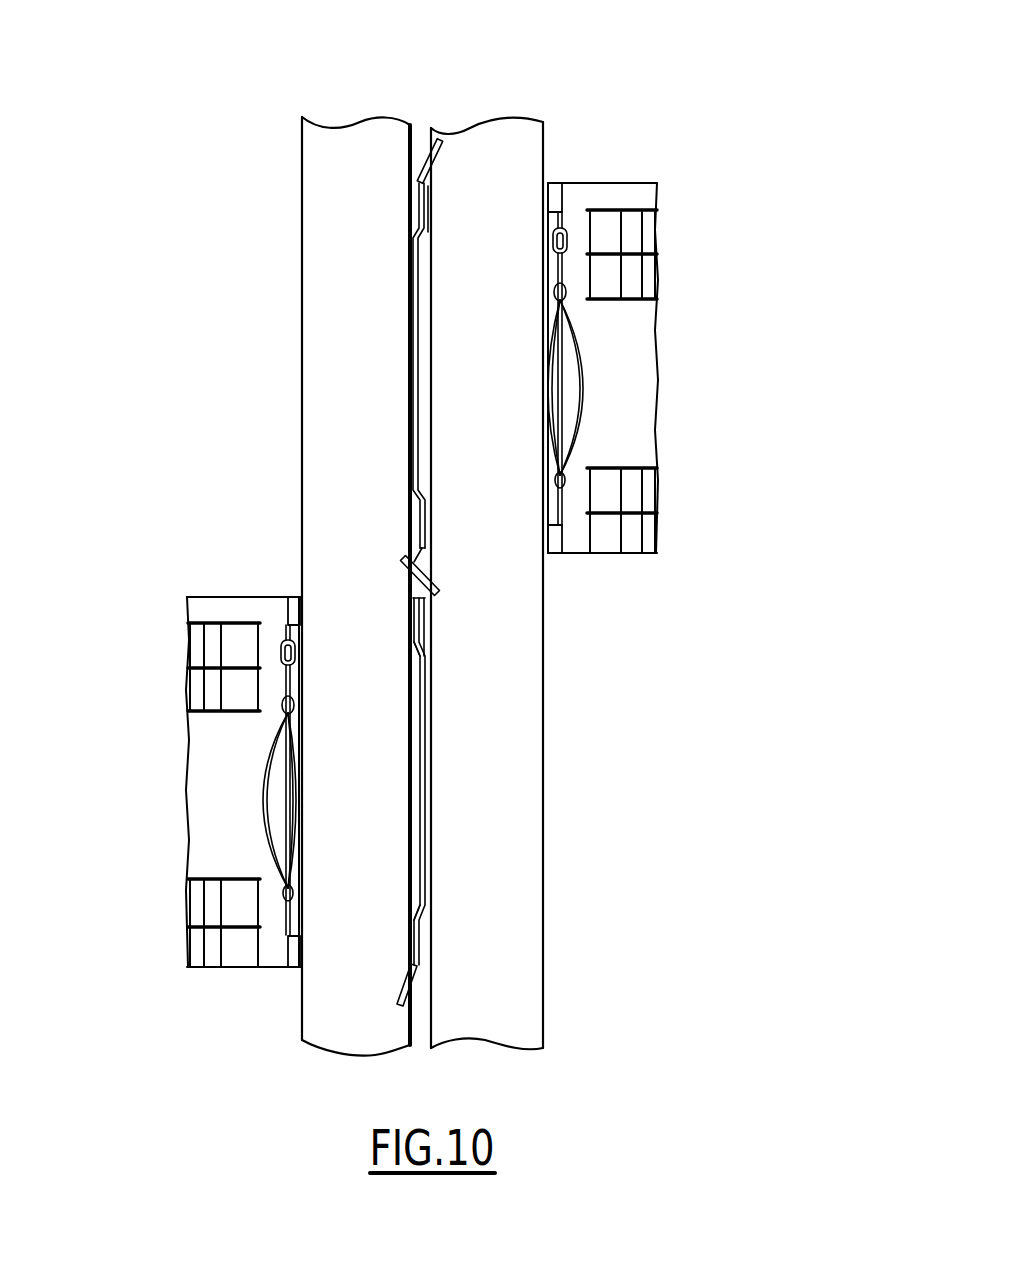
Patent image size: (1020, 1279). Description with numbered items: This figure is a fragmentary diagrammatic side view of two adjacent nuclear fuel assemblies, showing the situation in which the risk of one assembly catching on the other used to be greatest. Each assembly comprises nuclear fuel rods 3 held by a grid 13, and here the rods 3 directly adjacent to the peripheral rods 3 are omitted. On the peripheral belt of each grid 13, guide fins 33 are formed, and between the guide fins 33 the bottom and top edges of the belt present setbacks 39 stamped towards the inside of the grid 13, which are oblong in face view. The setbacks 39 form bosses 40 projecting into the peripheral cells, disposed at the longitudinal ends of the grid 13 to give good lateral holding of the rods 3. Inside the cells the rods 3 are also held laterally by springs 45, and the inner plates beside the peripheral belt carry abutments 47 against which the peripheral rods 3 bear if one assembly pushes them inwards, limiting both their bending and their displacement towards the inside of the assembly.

The nuclear fuel rod 3 is at (473, 143).
The grid 13 is at (710, 186).
The guide fin 33 is at (438, 150).
The setback 39 is at (420, 616).
The boss 40 is at (428, 640).
The spring 45 is at (583, 362).
The abutment 47 is at (292, 612).